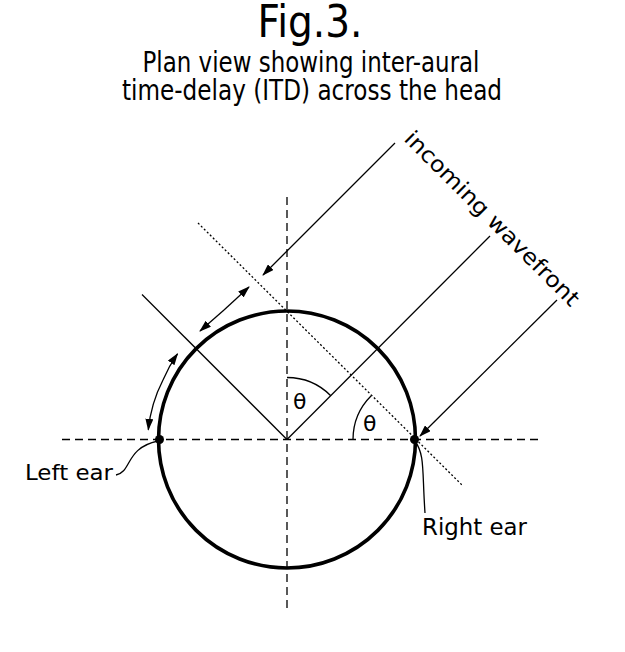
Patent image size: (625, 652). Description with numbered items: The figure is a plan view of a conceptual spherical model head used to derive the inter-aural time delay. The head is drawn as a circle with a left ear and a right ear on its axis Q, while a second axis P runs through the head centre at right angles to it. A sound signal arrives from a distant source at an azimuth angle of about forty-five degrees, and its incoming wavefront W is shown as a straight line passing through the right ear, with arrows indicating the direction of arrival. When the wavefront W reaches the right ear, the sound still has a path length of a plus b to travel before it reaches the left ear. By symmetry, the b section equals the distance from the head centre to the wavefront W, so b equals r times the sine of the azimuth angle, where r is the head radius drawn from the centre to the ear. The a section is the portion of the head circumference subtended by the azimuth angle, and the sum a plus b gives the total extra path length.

The median (front-back) axis P-P' P is at (289, 405).
The inter-aural axis Q-Q' Q is at (303, 441).
The wavefront W is at (334, 356).
The head radius r is at (221, 455).
The a section a is at (156, 392).
The b section b is at (224, 308).